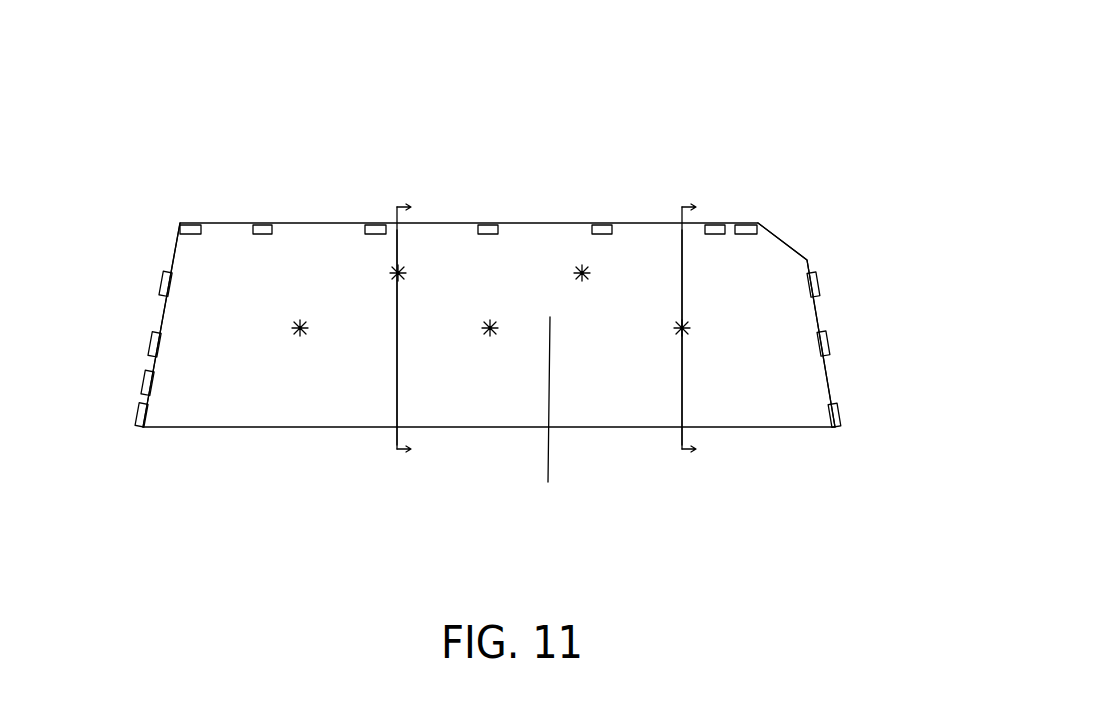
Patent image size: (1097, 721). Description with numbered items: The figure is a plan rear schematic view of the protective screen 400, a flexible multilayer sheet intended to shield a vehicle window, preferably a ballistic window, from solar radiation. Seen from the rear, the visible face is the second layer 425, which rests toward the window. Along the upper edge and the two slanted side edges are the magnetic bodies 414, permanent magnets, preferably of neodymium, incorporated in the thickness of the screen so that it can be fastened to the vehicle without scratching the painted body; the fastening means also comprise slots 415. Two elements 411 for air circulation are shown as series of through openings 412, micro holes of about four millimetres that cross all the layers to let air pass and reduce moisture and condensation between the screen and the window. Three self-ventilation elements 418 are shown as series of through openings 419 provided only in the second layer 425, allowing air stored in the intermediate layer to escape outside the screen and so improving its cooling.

The protective screen 400 is at (240, 130).
The element for air circulation 411 is at (413, 260).
The through openings 412 is at (395, 281).
The magnetic bodies 414 is at (195, 222).
The slots 415 is at (167, 260).
The self-ventilation element 418 is at (295, 346).
The self-ventilation through openings 419 is at (293, 333).
The second layer 425 is at (545, 421).